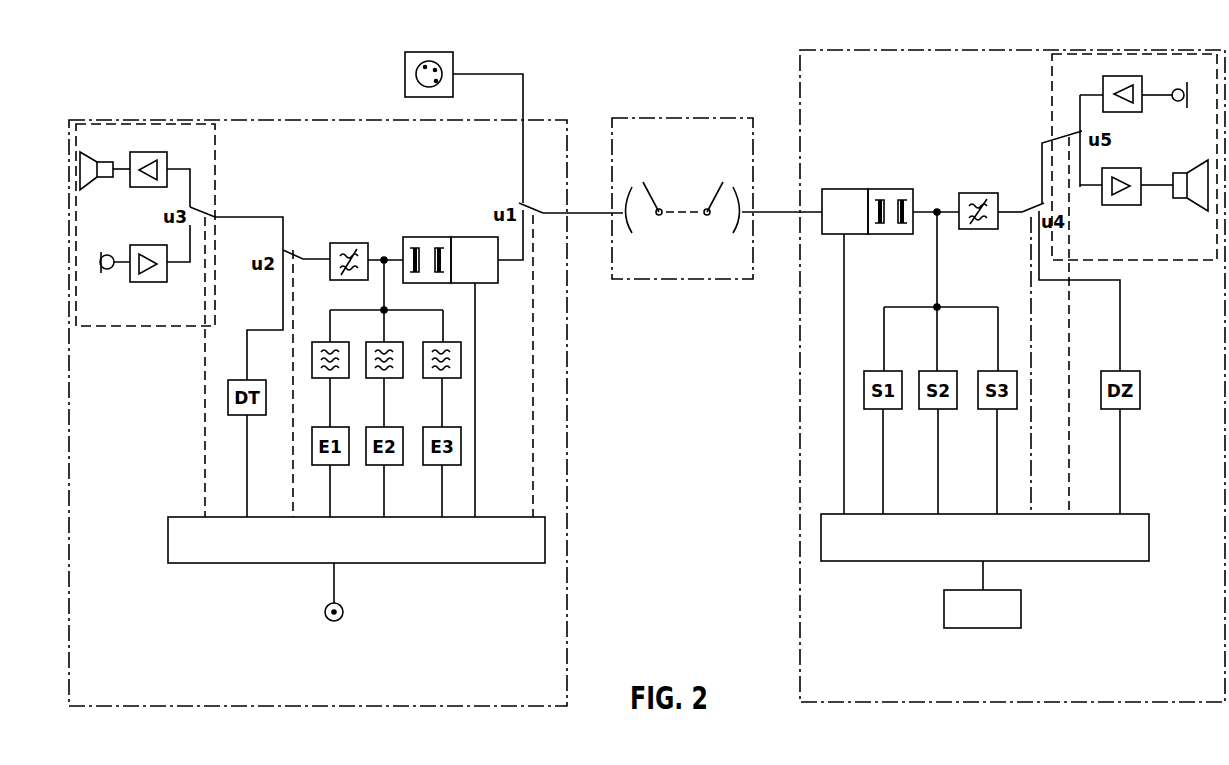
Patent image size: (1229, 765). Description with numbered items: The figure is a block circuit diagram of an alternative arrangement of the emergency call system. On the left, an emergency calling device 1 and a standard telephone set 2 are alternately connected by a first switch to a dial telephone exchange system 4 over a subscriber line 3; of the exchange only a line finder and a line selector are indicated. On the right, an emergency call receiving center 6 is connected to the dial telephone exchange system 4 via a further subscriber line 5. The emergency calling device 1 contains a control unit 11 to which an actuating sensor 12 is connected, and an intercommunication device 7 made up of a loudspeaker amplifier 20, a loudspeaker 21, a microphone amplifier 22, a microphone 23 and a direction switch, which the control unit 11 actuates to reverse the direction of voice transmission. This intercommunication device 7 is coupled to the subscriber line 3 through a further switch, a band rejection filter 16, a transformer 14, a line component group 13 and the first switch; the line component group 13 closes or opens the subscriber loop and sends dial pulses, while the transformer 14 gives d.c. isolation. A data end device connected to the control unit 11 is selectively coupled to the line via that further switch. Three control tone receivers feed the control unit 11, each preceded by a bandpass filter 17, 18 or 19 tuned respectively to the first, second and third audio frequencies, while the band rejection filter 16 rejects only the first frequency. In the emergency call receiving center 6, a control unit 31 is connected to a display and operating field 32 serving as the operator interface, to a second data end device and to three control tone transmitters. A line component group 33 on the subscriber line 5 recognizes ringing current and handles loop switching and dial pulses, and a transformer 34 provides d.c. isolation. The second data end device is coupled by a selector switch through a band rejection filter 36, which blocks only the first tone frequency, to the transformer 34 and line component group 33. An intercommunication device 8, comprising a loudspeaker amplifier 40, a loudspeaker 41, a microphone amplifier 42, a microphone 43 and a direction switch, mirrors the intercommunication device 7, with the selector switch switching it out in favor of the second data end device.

The emergency calling device 1 is at (257, 128).
The standard telephone set 2 is at (446, 68).
The subscriber line 3 is at (591, 211).
The dial telephone exchange system 4 is at (719, 120).
The further subscriber line 5 is at (775, 211).
The emergency call receiving center 6 is at (900, 63).
The intercommunication device 7 is at (217, 173).
The intercommunication device 8 is at (1050, 108).
The control unit 11 is at (195, 556).
The actuating sensor 12 is at (325, 612).
The line component group 13 is at (462, 237).
The transformer 14 is at (419, 237).
The band rejection filter 16 is at (336, 241).
The bandpass filter 17 is at (322, 342).
The bandpass filter 18 is at (378, 342).
The bandpass filter 19 is at (437, 342).
The loudspeaker amplifier 20 is at (158, 160).
The loudspeaker 21 is at (103, 164).
The microphone amplifier 22 is at (150, 282).
The microphone 23 is at (108, 270).
The control unit 31 is at (847, 557).
The display and operating field 32 is at (944, 614).
The line component group 33 is at (846, 190).
The transformer 34 is at (890, 190).
The band rejection filter 36 is at (977, 193).
The loudspeaker amplifier 40 is at (1127, 206).
The loudspeaker 41 is at (1183, 200).
The microphone amplifier 42 is at (1118, 86).
The microphone 43 is at (1179, 88).